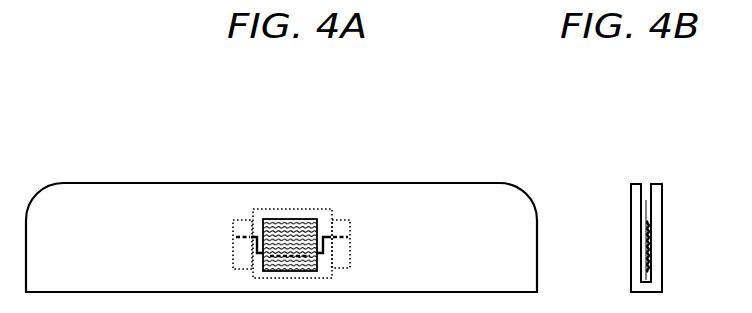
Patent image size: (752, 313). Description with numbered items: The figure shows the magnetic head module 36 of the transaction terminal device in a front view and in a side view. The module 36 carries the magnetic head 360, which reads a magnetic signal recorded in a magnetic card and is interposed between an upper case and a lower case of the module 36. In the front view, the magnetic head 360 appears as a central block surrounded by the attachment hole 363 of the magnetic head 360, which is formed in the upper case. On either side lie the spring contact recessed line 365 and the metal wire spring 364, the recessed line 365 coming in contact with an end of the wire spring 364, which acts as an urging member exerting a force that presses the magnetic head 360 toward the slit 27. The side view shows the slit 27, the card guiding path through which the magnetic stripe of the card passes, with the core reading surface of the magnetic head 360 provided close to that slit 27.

In FIG. 4A, the magnetic head module 36 is at (92, 212).
In FIG. 4B, the magnetic head module 36 is at (631, 207).
In FIG. 4A, the magnetic head 360 is at (278, 232).
In FIG. 4B, the magnetic head 360 is at (652, 207).
In FIG. 4A, the attachment hole 363 is at (302, 211).
In FIG. 4A, the wire spring 364 is at (337, 240).
In FIG. 4A, the spring contact recessed line 365 is at (243, 218).
In FIG. 4B, the slit 27 is at (647, 197).